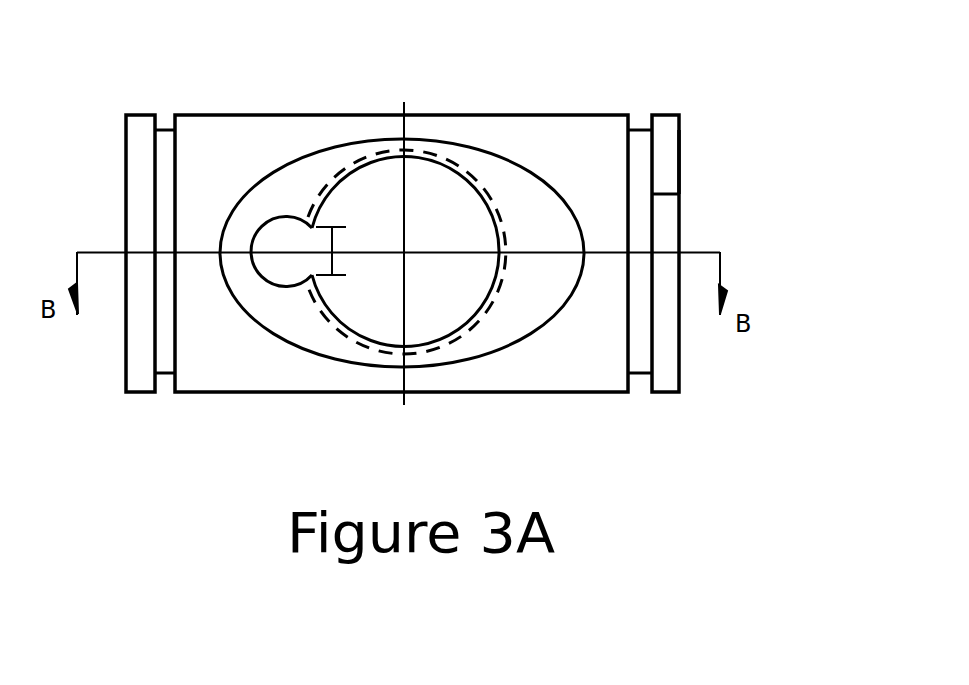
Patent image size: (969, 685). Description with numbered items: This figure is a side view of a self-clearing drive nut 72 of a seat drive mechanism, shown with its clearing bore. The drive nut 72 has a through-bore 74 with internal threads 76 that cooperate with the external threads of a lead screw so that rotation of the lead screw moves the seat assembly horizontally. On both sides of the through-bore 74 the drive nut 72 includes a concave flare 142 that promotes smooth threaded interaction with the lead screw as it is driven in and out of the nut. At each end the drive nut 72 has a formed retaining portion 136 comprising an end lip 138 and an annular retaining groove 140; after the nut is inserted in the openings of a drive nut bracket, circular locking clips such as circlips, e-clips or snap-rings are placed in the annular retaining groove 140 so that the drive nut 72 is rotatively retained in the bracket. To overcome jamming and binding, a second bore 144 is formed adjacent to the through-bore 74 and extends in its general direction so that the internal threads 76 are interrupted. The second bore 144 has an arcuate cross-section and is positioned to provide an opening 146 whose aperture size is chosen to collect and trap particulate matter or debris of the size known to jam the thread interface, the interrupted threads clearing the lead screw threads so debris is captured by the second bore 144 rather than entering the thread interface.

The drive nut 72 is at (208, 115).
The through-bore 74 is at (371, 203).
The internal threads 76 is at (441, 152).
The retaining portion 136 is at (680, 119).
The end lip 138 is at (682, 160).
The annular retaining groove 140 is at (682, 193).
The concave flare 142 is at (530, 310).
The second bore 144 is at (268, 288).
The opening 146 is at (335, 258).